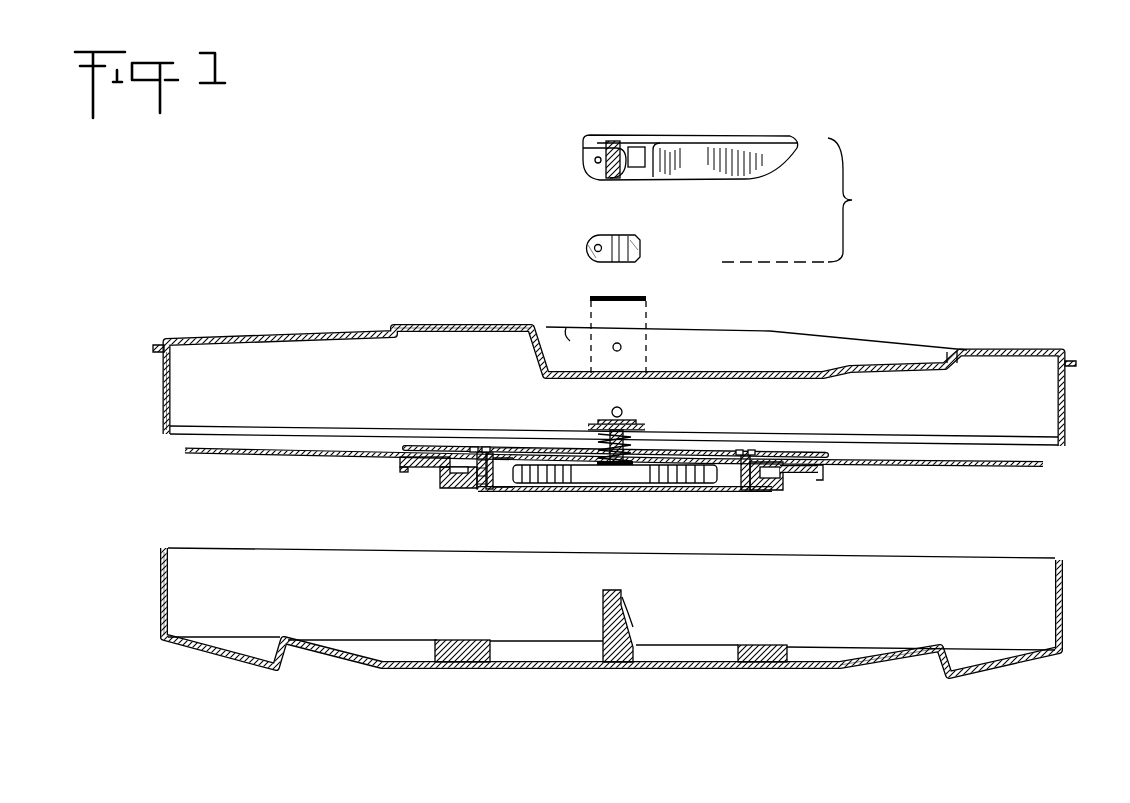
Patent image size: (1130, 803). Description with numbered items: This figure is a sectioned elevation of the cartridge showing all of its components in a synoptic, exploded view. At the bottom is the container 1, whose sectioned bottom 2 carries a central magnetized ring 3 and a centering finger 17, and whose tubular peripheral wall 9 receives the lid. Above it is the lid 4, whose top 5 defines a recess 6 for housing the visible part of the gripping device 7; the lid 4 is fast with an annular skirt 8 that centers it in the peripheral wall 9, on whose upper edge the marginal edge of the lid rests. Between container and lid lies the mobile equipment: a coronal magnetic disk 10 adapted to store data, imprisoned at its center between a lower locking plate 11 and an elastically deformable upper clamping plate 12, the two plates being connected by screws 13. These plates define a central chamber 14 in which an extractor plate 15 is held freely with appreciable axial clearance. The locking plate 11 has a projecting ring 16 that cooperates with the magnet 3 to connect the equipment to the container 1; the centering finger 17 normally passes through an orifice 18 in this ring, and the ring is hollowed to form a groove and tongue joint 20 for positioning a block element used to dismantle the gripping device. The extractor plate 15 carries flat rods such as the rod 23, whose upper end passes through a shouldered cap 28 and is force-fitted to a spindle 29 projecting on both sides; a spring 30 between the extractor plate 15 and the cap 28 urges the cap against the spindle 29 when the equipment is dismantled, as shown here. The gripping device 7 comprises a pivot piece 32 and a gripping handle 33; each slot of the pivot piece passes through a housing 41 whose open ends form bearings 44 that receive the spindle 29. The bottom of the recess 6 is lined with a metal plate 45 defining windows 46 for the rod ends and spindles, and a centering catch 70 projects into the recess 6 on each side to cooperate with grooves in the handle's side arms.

The container 1 is at (1070, 622).
The bottom 2 is at (879, 668).
The magnetized ring 3 is at (765, 645).
The lid 4 is at (1052, 346).
The top 5 is at (432, 325).
The recess 6 is at (762, 348).
The gripping device 7 is at (804, 200).
The annular skirt 8 is at (175, 404).
The tubular peripheral wall 9 is at (169, 606).
The magnetic disk 10 is at (1040, 466).
The lower locking plate 11 is at (828, 473).
The upper clamping plate 12 is at (795, 452).
The screws 13 is at (753, 450).
The central chamber 14 is at (500, 460).
The extractor plate 15 is at (672, 477).
The projecting ring 16 is at (782, 493).
The centering finger 17 is at (622, 598).
The orifice 18 is at (626, 492).
The groove and tongue joint 20 is at (502, 490).
The flat rod 23 is at (645, 426).
The shouldered cap 28 is at (598, 427).
The spindle 29 is at (640, 404).
The spring 30 is at (645, 447).
The pivot piece 32 is at (607, 236).
The gripping handle 33 is at (699, 137).
The housing 41 is at (645, 240).
The bearing 44 is at (590, 257).
The metal plate 45 is at (648, 297).
The window 46 is at (626, 293).
The centering catch 70 is at (621, 347).